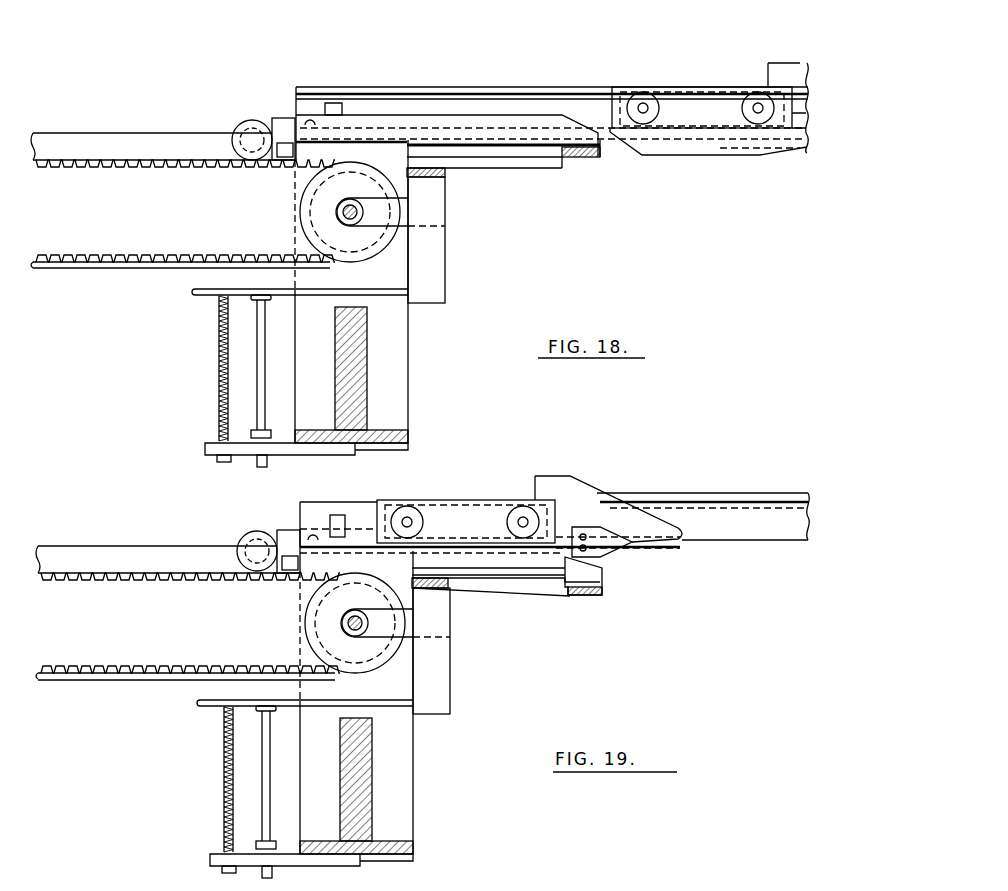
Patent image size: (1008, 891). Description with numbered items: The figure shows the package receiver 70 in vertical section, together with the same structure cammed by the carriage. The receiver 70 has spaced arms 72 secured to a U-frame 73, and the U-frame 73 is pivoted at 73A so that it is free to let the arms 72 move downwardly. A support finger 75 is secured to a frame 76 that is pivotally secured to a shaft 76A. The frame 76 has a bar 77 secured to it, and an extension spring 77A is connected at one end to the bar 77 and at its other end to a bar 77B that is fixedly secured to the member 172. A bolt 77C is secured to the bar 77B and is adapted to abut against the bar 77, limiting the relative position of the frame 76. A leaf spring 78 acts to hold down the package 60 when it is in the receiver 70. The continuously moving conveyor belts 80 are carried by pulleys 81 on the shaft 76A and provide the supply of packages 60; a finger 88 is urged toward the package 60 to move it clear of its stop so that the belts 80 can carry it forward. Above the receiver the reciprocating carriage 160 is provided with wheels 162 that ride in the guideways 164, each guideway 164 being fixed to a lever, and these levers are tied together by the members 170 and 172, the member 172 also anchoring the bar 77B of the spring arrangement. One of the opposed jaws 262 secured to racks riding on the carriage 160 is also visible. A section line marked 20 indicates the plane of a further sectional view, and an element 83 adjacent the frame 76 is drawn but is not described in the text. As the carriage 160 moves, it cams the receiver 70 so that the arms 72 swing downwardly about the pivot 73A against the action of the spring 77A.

In FIG. 18, the package receiver 70 is at (491, 60).
In FIG. 19, the package receiver 70 is at (518, 450).
In FIG. 19, the section line 20- 20 is at (371, 460).
In FIG. 18, the package 60 is at (565, 158).
In FIG. 19, the spaced arms 72 is at (543, 594).
In FIG. 18, the U-frame 73 is at (278, 124).
In FIG. 19, the U-frame 73 is at (284, 542).
In FIG. 18, the pivot 73A is at (254, 135).
In FIG. 19, the pivot 73A is at (258, 545).
In FIG. 18, the support finger 75 is at (497, 165).
In FIG. 19, the support finger 75 is at (498, 576).
In FIG. 18, the frame 76 is at (438, 259).
In FIG. 19, the frame 76 is at (443, 658).
In FIG. 18, the shaft 76A is at (349, 205).
In FIG. 19, the shaft 76A is at (352, 615).
In FIG. 18, the bar 77 is at (198, 291).
In FIG. 19, the bar 77 is at (200, 703).
In FIG. 18, the extension spring 77A is at (220, 366).
In FIG. 19, the extension spring 77A is at (224, 770).
In FIG. 18, the bar 77B is at (240, 456).
In FIG. 19, the bar 77B is at (245, 867).
In FIG. 18, the bolt 77C is at (263, 366).
In FIG. 19, the bolt 77C is at (268, 766).
In FIG. 18, the leaf spring 78 is at (376, 140).
In FIG. 19, the leaf spring 78 is at (346, 545).
In FIG. 18, the conveyor belts 80 is at (187, 161).
In FIG. 18, the pulleys 81 is at (312, 209).
In FIG. 19, the pulleys 81 is at (318, 622).
In FIG. 18, the pad 83 is at (405, 178).
In FIG. 19, the pad 83 is at (415, 590).
In FIG. 18, the finger 88 is at (282, 158).
In FIG. 19, the finger 88 is at (286, 571).
In FIG. 18, the reciprocating carriage 160 is at (697, 98).
In FIG. 19, the reciprocating carriage 160 is at (468, 506).
In FIG. 18, the wheels 162 is at (643, 92).
In FIG. 19, the wheels 162 is at (407, 506).
In FIG. 18, the guideways 164 is at (535, 93).
In FIG. 19, the guideways 164 is at (690, 494).
In FIG. 18, the member 170 is at (367, 386).
In FIG. 19, the member 170 is at (372, 803).
In FIG. 18, the member 172 is at (402, 438).
In FIG. 19, the member 172 is at (398, 849).
In FIG. 18, the jaw 262 is at (679, 157).